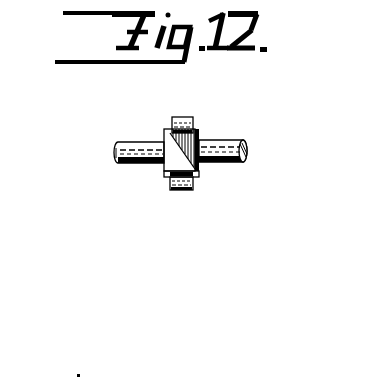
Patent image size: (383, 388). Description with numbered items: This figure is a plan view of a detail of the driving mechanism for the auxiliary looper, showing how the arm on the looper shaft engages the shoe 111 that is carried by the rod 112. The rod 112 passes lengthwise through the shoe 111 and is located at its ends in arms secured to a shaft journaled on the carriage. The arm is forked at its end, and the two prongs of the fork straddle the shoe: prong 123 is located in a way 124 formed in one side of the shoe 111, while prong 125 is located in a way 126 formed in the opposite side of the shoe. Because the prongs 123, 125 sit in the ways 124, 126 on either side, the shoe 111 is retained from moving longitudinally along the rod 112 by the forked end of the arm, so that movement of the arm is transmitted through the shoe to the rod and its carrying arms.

The shoe 111 is at (176, 152).
The rod 112 is at (245, 148).
The prong 123 is at (188, 126).
The way 124 is at (177, 131).
The prong 125 is at (173, 190).
The way 126 is at (200, 175).